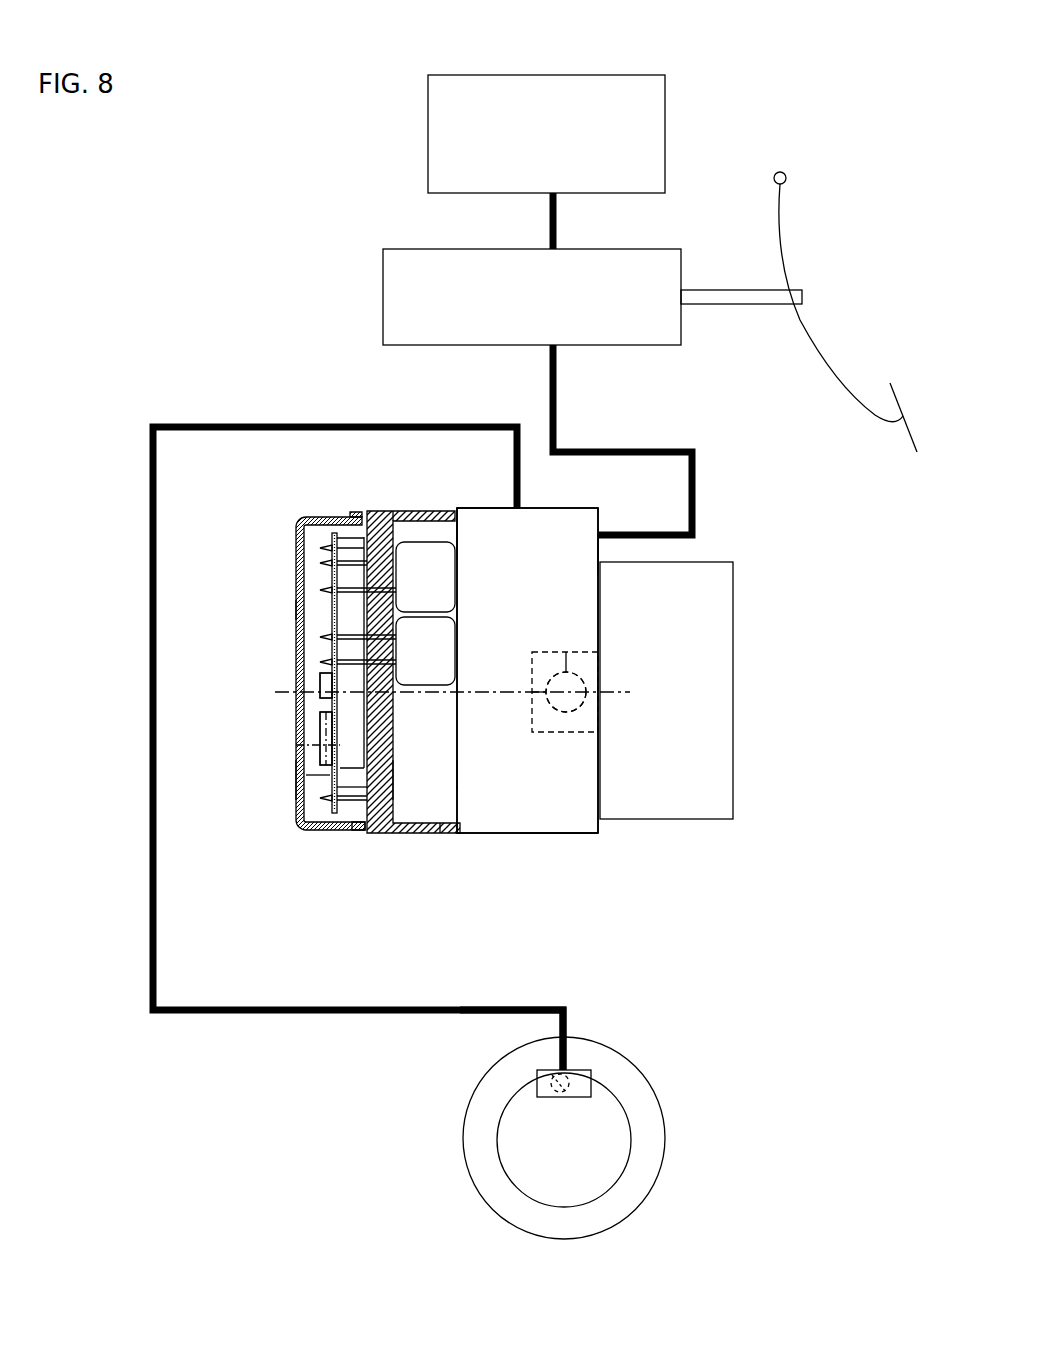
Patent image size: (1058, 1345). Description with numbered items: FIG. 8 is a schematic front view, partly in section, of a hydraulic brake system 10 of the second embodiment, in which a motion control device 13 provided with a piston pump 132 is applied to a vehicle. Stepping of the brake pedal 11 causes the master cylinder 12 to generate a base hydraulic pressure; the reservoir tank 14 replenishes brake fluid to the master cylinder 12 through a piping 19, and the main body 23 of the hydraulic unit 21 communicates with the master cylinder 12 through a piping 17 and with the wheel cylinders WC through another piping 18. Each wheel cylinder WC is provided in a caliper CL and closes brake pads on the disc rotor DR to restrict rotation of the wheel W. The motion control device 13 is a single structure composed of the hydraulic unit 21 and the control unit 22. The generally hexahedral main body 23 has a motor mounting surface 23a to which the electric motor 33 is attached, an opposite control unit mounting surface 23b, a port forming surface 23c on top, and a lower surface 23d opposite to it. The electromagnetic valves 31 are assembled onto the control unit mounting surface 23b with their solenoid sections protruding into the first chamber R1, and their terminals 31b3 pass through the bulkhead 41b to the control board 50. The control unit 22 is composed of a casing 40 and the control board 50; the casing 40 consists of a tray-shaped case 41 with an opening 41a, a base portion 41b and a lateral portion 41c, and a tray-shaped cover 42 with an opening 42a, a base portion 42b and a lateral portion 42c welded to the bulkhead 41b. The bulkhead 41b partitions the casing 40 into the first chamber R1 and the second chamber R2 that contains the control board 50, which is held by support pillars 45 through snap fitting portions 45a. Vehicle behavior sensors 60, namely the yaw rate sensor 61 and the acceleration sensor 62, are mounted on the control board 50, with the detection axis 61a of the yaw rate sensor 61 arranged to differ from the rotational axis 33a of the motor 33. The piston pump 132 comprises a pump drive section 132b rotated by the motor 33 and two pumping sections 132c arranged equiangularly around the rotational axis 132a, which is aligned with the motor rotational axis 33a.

The hydraulic brake system 10 is at (193, 362).
The brake pedal 11 is at (818, 340).
The master cylinder 12 is at (402, 249).
The motion control device 13 is at (602, 507).
The reservoir tank 14 is at (540, 75).
The piping 17 is at (553, 396).
The piping 18 is at (458, 1010).
The piping 19 is at (553, 222).
The hydraulic unit 21 is at (513, 838).
The control unit 22 is at (420, 948).
The main body 23 is at (582, 835).
The motor mounting surface 23a is at (603, 556).
The control unit mounting surface 23b is at (440, 522).
The port forming surface 23c is at (481, 508).
The surface opposite to the port forming surface 23d is at (548, 836).
The electromagnetic valves 31 is at (443, 575).
The terminals 31b3 is at (320, 660).
The electric motor 33 is at (733, 690).
The rotational axis of the motor 33a is at (622, 692).
The casing 40 is at (428, 896).
The case 41 is at (407, 838).
The opening 41a is at (457, 773).
The base portion (bulkhead) 41b is at (362, 586).
The lateral portion 41c is at (394, 515).
The cover 42 is at (347, 838).
The opening 42a is at (422, 790).
The base portion 42b is at (297, 610).
The lateral portion 42c is at (332, 517).
The support pillars 45 is at (345, 530).
The snap fitting portions 45a is at (320, 556).
The control board 50 is at (297, 780).
The vehicle behavior sensors 60 is at (215, 668).
The yaw rate sensor 61 is at (320, 730).
The detection axis 61a is at (296, 745).
The acceleration sensor 62 is at (320, 686).
The piston pump 132 is at (580, 737).
The rotational axis of the pump drive section 132a is at (615, 690).
The pump drive section 132b is at (572, 652).
The pumping sections 132c is at (545, 688).
The first chamber R1 is at (446, 759).
The second chamber R2 is at (325, 777).
The wheel W is at (650, 1125).
The disc rotor DR is at (625, 1140).
The caliper CL is at (591, 1082).
The wheel cylinder WC is at (530, 1068).